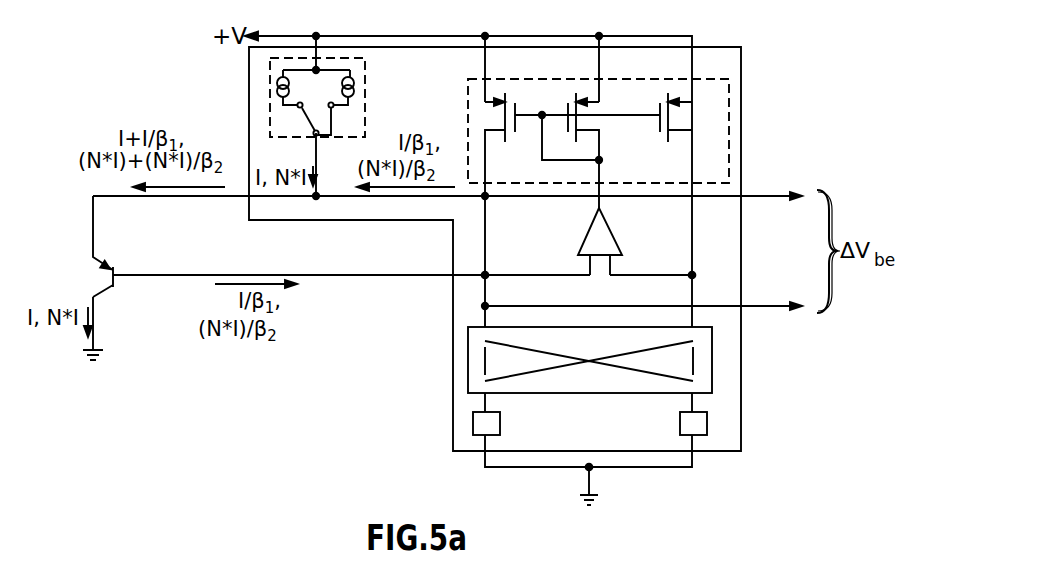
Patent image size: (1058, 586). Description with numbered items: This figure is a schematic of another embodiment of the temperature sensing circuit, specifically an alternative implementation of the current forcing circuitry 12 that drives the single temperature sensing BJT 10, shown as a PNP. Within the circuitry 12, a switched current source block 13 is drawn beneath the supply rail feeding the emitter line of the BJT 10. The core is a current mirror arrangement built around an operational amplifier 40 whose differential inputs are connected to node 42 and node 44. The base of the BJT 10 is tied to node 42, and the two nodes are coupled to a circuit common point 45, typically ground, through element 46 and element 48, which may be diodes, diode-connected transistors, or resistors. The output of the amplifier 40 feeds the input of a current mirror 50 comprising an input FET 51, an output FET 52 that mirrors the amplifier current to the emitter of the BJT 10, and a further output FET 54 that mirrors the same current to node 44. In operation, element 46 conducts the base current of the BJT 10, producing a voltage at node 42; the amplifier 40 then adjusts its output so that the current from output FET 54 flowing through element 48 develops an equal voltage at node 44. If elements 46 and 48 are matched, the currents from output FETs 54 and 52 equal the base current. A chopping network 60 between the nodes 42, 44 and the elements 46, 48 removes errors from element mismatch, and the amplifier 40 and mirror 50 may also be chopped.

The BJT 10 is at (86, 275).
The current forcing circuitry 12 is at (741, 47).
The switched current source 13 is at (365, 97).
The operational amplifier 40 is at (585, 236).
The node 42 is at (488, 278).
The node 44 is at (692, 276).
The circuit common point 45 is at (589, 467).
The element 46 is at (500, 426).
The element 48 is at (680, 426).
The current mirror 50 is at (571, 78).
The input FET 51 is at (604, 123).
The output FET 52 is at (496, 146).
The output FET 54 is at (683, 143).
The chopping network 60 is at (593, 327).